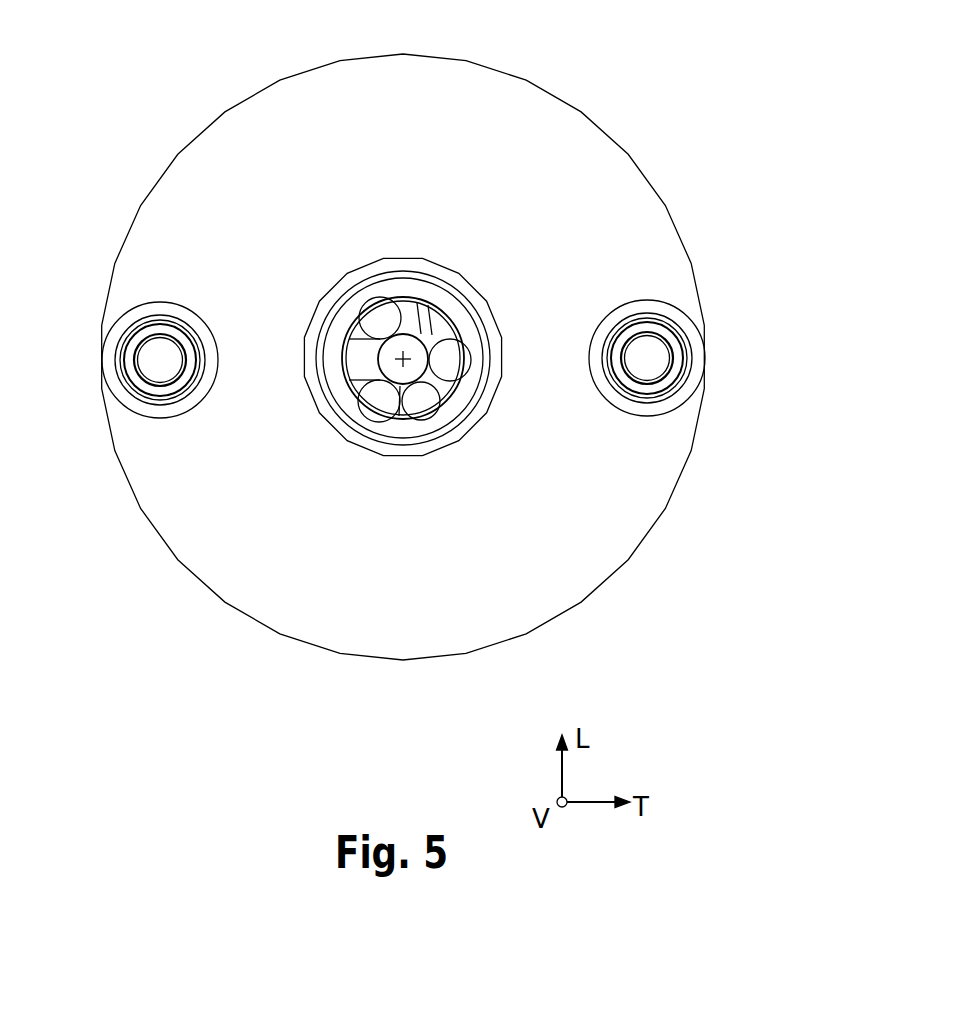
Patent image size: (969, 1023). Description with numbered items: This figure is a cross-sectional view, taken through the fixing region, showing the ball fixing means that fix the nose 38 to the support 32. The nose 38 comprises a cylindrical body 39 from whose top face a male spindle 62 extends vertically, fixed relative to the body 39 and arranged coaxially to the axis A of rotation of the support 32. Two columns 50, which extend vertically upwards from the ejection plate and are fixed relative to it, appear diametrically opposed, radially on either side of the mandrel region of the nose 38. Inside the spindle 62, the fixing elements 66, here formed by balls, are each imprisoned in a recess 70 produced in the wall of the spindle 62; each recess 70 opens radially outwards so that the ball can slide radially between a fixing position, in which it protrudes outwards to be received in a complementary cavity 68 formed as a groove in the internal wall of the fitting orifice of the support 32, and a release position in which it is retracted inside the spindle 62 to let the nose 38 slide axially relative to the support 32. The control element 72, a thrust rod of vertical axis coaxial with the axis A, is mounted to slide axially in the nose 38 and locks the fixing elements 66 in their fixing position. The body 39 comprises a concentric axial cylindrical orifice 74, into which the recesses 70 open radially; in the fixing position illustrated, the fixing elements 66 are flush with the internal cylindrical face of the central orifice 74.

The nose 38 is at (398, 333).
The cylindrical body 39 is at (473, 100).
The columns 50 is at (160, 348).
The support 32 is at (457, 410).
The cavity 68 is at (463, 333).
The male spindle 62 is at (437, 322).
The fixing elements 66 is at (457, 363).
The recess 70 is at (398, 392).
The control element 72 is at (408, 373).
The concentric axial cylindrical orifice 74 is at (384, 362).
The axis of rotation A is at (410, 350).